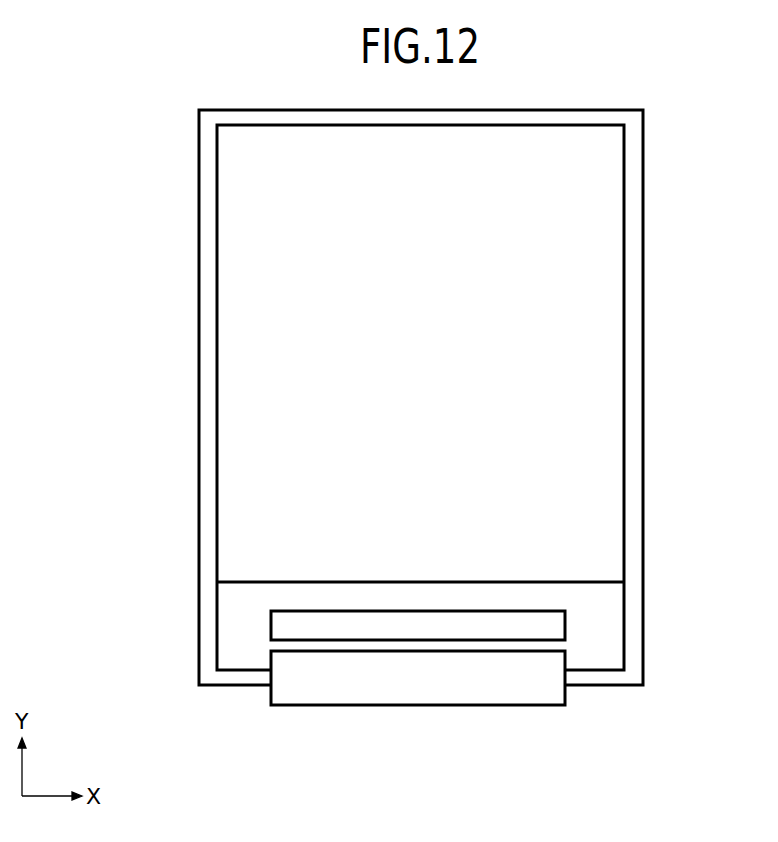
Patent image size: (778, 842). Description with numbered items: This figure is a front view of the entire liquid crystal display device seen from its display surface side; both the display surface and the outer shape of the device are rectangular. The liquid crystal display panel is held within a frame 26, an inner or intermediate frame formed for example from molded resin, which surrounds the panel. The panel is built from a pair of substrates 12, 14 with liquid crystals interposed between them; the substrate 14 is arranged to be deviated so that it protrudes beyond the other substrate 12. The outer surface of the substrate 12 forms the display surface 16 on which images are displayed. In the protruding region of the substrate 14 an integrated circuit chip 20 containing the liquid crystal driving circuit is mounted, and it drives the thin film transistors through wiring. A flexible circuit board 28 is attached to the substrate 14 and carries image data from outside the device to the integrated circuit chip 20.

The substrate 12 is at (233, 469).
The substrate 14 is at (235, 633).
The display surface 16 is at (588, 318).
The integrated circuit chip 20 is at (551, 625).
The frame 26 is at (633, 233).
The flexible circuit board 28 is at (514, 692).